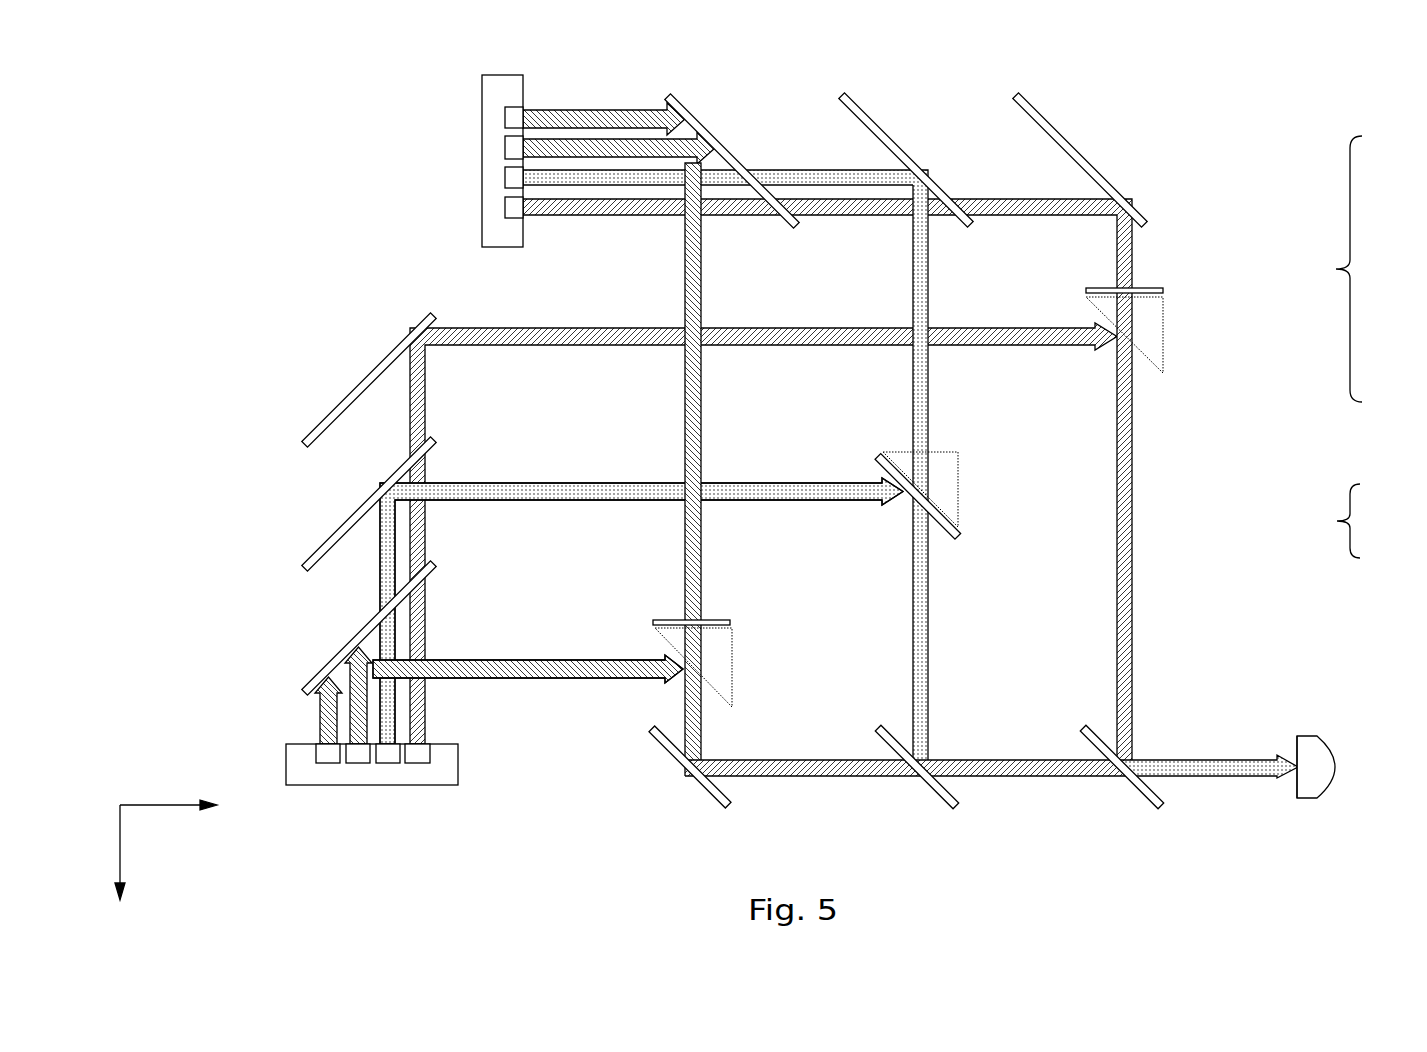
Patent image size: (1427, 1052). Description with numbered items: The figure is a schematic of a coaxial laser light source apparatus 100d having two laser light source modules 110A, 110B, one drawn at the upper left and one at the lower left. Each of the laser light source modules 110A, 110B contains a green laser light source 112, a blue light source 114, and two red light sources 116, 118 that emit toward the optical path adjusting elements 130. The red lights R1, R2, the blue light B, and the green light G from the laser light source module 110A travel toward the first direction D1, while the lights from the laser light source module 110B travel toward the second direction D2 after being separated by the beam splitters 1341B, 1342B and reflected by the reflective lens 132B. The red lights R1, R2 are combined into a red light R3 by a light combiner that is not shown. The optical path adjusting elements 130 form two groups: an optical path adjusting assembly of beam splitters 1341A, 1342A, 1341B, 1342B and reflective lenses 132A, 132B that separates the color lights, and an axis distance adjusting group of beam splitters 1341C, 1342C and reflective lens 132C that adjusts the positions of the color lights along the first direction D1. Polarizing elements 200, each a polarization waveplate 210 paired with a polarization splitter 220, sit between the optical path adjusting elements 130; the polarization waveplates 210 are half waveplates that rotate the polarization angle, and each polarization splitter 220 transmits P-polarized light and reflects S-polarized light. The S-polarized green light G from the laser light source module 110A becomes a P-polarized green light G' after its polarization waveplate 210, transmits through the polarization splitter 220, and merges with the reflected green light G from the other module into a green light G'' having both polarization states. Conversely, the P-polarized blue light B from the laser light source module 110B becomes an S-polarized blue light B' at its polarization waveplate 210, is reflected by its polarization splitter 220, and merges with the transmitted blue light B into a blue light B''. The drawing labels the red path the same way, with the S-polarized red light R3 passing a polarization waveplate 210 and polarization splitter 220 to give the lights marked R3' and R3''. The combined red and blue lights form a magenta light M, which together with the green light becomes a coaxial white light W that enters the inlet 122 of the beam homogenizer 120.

The coaxial laser light source apparatus 100d is at (1354, 104).
The laser light source module 110A is at (503, 80).
The laser light source module 110B is at (300, 765).
The green laser light source 112 is at (505, 210).
The blue light source 114 is at (505, 180).
The red light source 116 is at (505, 150).
The red light source 118 is at (505, 120).
The beam homogenizer 120 is at (1312, 790).
The inlet 122 is at (1297, 740).
The optical path adjusting elements 130 is at (1358, 269).
The reflective lens 132A is at (1015, 93).
The reflective lens 132B is at (305, 442).
The reflective lens 132C is at (712, 795).
The beam splitter 1341A is at (670, 95).
The beam splitter 1342A is at (845, 93).
The beam splitter 1341B is at (305, 690).
The beam splitter 1342B is at (305, 568).
The beam splitter 1341C is at (940, 797).
The beam splitter 1342C is at (1143, 792).
The polarizing elements 200 is at (1345, 521).
The polarization waveplate 210 is at (1163, 290).
The polarization splitter 220 is at (1155, 332).
The red light R1 is at (575, 148).
The red light R2 is at (620, 117).
The red light R3 is at (537, 451).
The polarized red light beam R3' is at (643, 610).
The converted red light beam R3'' is at (746, 690).
The blue light B is at (622, 457).
The blue light B' is at (881, 532).
The blue light B'' is at (966, 472).
The green light G is at (737, 471).
The green light G' is at (1081, 275).
The green light G'' is at (1171, 487).
The magenta light M is at (1035, 768).
The white light W is at (1200, 768).
The first direction D1 is at (122, 869).
The second direction D2 is at (188, 805).